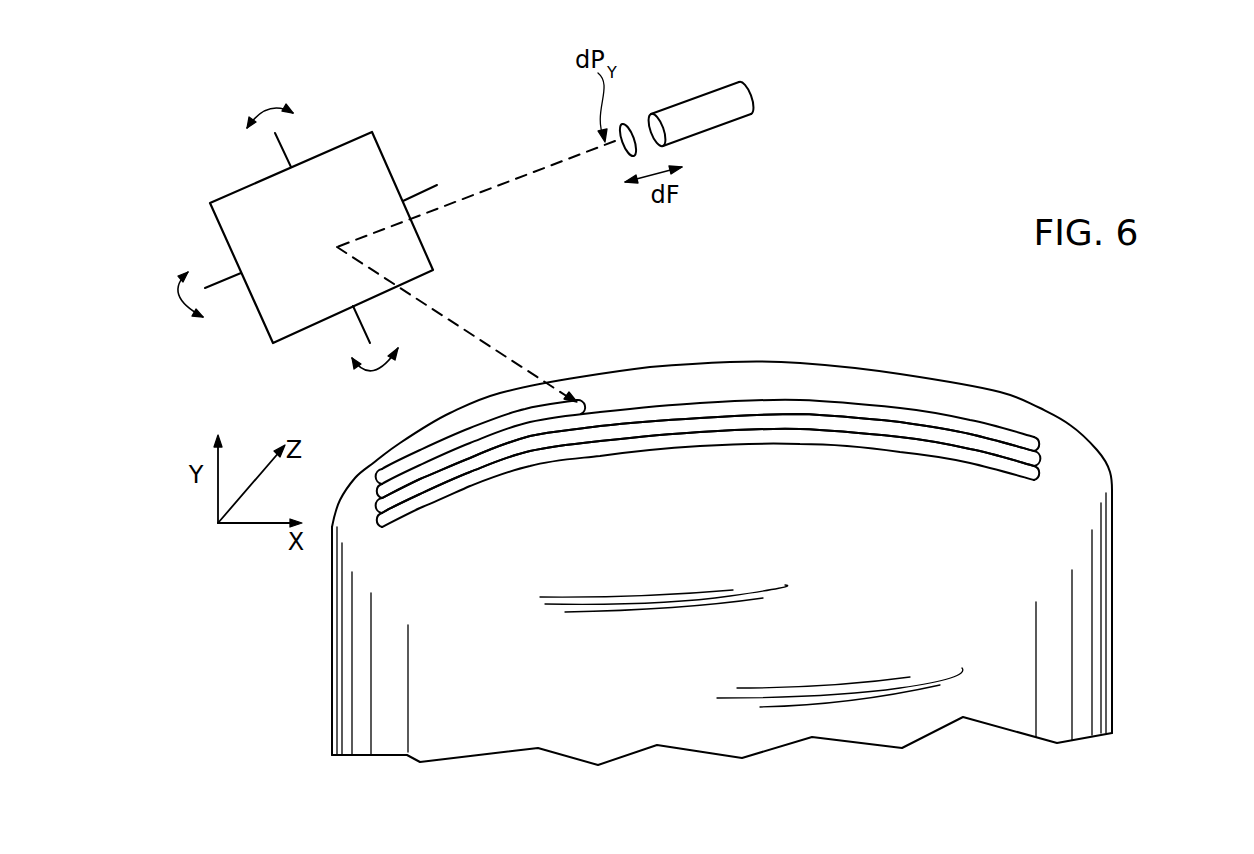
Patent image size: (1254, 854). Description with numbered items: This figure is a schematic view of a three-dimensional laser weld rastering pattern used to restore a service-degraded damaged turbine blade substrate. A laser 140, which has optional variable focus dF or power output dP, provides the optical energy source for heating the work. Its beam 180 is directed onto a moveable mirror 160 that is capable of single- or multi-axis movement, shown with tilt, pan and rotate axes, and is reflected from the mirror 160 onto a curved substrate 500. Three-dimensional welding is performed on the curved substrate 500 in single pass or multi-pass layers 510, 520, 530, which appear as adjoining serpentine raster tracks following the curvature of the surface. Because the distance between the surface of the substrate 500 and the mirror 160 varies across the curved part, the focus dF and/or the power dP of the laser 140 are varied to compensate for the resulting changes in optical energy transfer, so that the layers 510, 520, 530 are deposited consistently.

The laser 140 is at (728, 102).
The mirror 160 is at (355, 163).
The laser beam 180 is at (518, 177).
The curved substrate 500 is at (1162, 633).
The layer 510 is at (1040, 478).
The layer 520 is at (1040, 462).
The layer 530 is at (1028, 430).